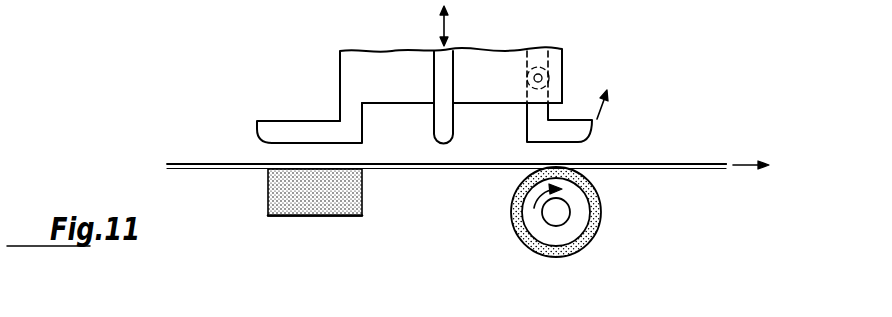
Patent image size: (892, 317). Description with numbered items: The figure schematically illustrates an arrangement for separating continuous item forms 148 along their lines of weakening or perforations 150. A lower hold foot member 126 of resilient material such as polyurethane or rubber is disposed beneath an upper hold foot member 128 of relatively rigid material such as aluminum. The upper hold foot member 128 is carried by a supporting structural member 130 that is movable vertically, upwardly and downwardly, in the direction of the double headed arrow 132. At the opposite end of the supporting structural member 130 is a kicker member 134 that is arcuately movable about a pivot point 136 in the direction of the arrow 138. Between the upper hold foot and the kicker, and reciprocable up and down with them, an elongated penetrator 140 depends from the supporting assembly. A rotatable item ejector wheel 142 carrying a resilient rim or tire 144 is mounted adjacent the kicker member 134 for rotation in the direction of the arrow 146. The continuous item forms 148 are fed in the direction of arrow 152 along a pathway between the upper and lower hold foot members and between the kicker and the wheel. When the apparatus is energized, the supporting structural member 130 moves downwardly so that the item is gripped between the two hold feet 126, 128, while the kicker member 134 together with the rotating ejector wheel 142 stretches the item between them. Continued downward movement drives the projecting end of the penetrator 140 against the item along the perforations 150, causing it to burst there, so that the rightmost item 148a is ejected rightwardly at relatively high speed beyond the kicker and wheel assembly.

The lower hold foot member 126 is at (268, 186).
The upper hold foot member 128 is at (280, 120).
The supporting structural member 130 is at (394, 51).
The double headed arrow 132 is at (447, 29).
The kicker member 134 is at (530, 123).
The pivot point 136 is at (545, 75).
The arrow 138 is at (604, 100).
The elongated penetrator 140 is at (440, 121).
The rotatable item ejector wheel 142 is at (581, 220).
The resilient rim or tire 144 is at (595, 201).
The arrow 146 is at (533, 196).
The continuous item forms 148 is at (218, 163).
The rightmost item 148a is at (632, 165).
The perforations 150 is at (443, 169).
The arrow 152 is at (745, 165).